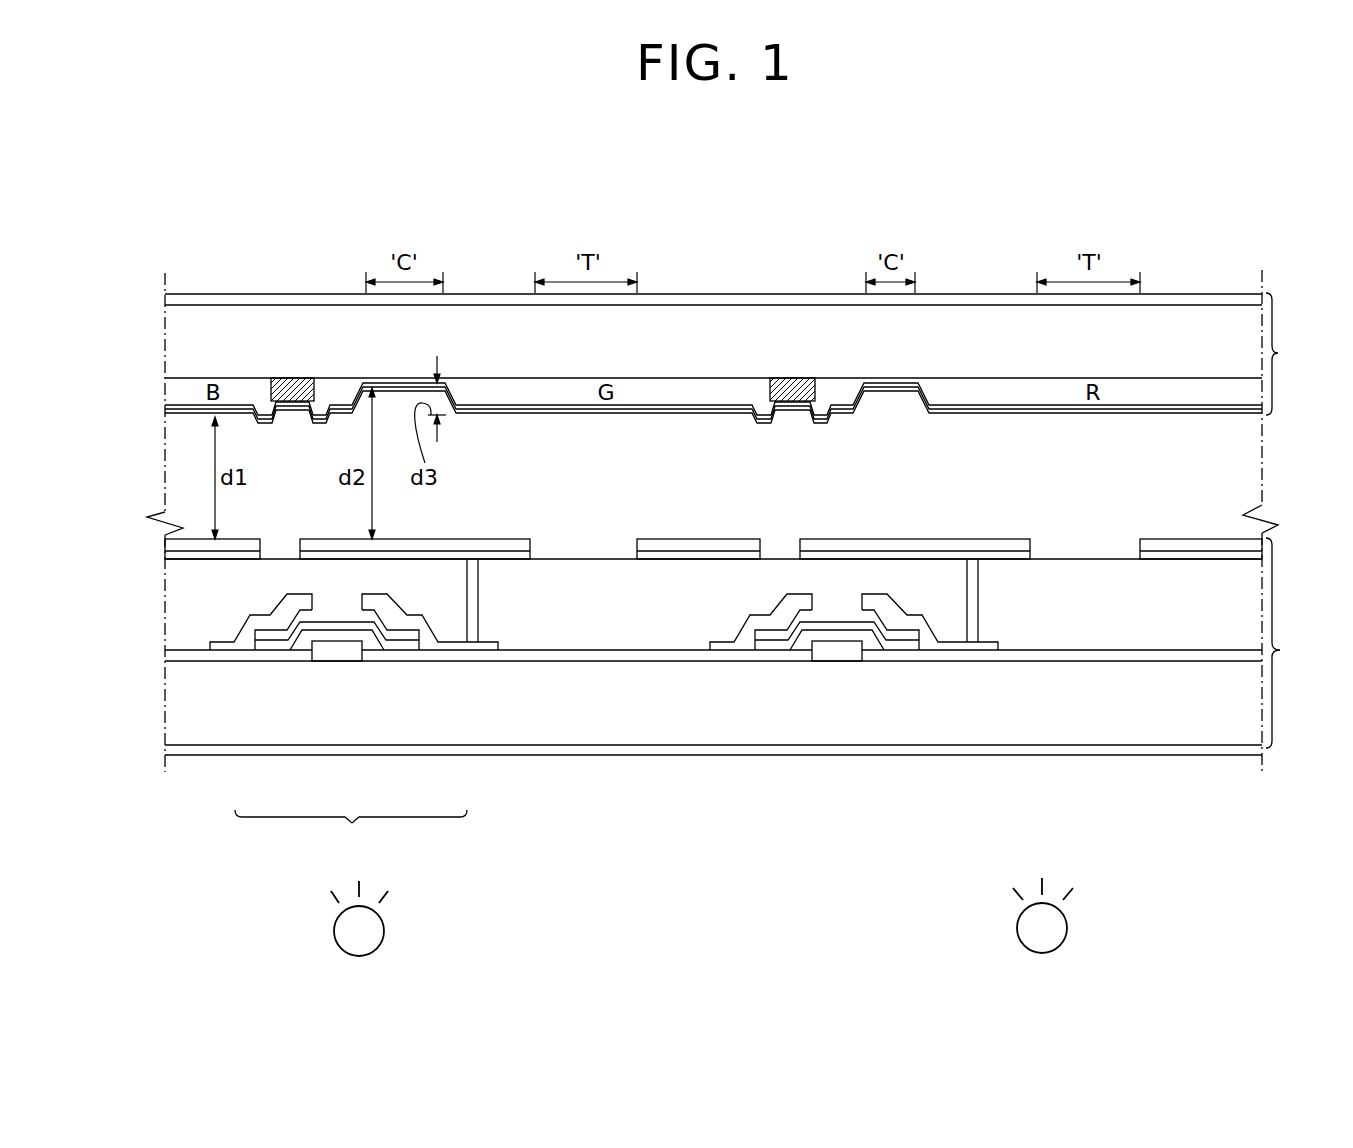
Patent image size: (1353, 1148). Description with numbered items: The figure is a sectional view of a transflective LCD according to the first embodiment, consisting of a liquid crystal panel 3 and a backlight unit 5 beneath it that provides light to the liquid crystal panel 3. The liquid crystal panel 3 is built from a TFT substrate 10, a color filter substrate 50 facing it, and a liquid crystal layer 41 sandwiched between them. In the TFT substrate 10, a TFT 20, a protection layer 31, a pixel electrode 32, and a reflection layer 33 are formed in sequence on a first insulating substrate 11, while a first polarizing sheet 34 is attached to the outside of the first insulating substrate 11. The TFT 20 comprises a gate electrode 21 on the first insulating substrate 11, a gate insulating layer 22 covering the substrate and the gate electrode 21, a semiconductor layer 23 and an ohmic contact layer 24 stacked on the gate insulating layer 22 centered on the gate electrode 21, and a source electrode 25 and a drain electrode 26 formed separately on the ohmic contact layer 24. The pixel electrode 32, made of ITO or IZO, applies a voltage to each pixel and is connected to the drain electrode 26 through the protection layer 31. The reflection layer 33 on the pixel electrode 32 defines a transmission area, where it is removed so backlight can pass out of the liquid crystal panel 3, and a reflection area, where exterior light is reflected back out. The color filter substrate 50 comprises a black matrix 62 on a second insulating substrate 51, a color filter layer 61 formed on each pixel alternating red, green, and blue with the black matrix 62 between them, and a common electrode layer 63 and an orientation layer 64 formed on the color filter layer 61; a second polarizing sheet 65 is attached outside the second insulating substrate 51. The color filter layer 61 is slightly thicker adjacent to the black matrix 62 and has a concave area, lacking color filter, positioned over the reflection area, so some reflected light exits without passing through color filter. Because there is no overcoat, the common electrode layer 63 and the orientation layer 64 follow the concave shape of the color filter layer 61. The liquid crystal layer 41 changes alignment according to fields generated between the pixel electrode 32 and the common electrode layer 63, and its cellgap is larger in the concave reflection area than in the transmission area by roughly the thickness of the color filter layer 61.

The liquid crystal panel 3 is at (1007, 231).
The backlight unit 5 is at (1132, 905).
The TFT substrate 10 is at (1291, 643).
The first insulating substrate 11 is at (172, 700).
The TFT 20 is at (351, 830).
The gate electrode 21 is at (338, 655).
The gate insulating layer 22 is at (384, 655).
The semiconductor layer 23 is at (289, 650).
The ohmic contact layer 24 is at (414, 643).
The source electrode 25 is at (233, 645).
The drain electrode 26 is at (469, 645).
The protection layer 31 is at (172, 617).
The pixel electrode 32 is at (176, 557).
The reflection layer 33 is at (172, 545).
The first polarizing sheet 34 is at (170, 748).
The liquid crystal layer 41 is at (1248, 484).
The color filter substrate 50 is at (1290, 354).
The second insulating substrate 51 is at (175, 340).
The color filter layer 61 is at (175, 395).
The black matrix 62 is at (290, 378).
The common electrode layer 63 is at (175, 416).
The orientation layer 64 is at (181, 412).
The second polarizing sheet 65 is at (175, 298).